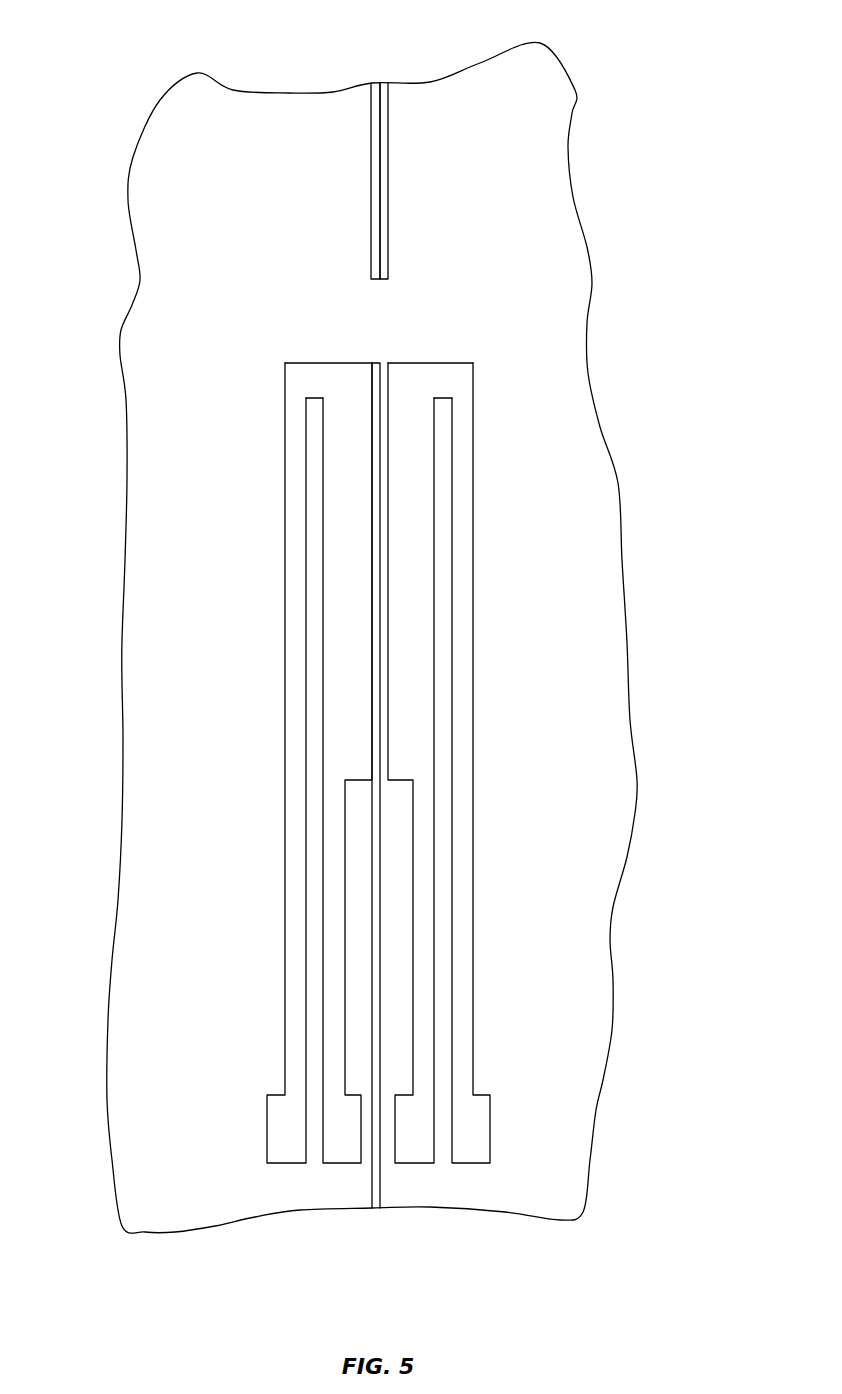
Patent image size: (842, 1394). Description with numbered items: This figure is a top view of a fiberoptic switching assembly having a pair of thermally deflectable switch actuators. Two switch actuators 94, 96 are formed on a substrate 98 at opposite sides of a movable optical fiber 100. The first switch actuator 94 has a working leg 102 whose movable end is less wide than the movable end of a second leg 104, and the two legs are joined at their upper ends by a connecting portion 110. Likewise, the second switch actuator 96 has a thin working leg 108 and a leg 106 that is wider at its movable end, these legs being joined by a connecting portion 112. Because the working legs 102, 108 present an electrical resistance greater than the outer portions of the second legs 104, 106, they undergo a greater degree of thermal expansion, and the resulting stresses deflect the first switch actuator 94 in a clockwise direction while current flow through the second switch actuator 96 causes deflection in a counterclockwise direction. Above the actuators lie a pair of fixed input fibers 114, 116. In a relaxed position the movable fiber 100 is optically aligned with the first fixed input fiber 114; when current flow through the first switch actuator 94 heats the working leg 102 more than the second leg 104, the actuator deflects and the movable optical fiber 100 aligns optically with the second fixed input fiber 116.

The first switch actuator 94 is at (206, 726).
The second switch actuator 96 is at (553, 718).
The substrate 98 is at (228, 1200).
The movable optical fiber 100 is at (373, 1189).
The working leg 102 is at (293, 787).
The second leg 104 is at (345, 682).
The leg 106 is at (413, 733).
The working leg 108 is at (462, 688).
The connecting bar of first electrode 110 is at (307, 385).
The connecting bar of second electrode 112 is at (443, 375).
The first fixed input fiber 114 is at (373, 188).
The second fixed input fiber 116 is at (387, 167).